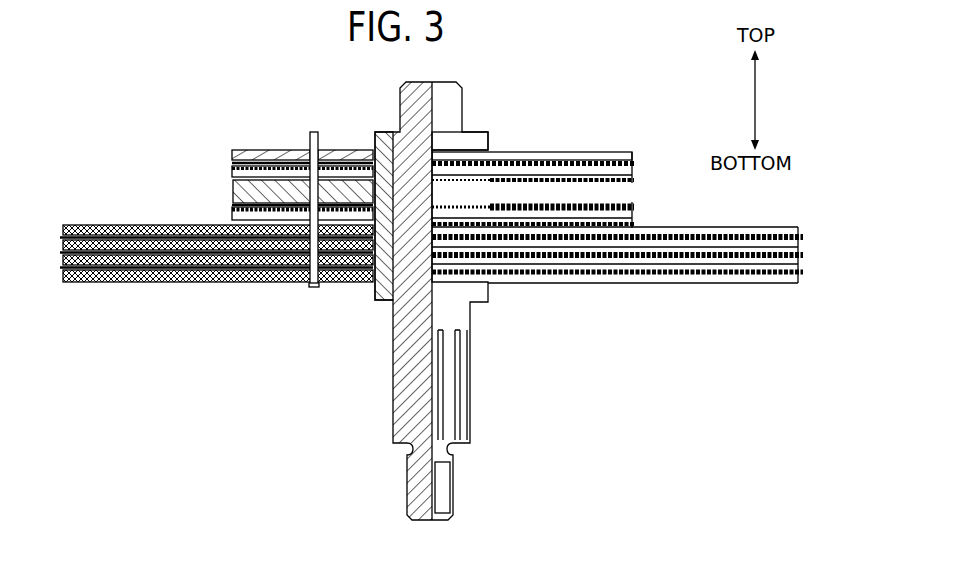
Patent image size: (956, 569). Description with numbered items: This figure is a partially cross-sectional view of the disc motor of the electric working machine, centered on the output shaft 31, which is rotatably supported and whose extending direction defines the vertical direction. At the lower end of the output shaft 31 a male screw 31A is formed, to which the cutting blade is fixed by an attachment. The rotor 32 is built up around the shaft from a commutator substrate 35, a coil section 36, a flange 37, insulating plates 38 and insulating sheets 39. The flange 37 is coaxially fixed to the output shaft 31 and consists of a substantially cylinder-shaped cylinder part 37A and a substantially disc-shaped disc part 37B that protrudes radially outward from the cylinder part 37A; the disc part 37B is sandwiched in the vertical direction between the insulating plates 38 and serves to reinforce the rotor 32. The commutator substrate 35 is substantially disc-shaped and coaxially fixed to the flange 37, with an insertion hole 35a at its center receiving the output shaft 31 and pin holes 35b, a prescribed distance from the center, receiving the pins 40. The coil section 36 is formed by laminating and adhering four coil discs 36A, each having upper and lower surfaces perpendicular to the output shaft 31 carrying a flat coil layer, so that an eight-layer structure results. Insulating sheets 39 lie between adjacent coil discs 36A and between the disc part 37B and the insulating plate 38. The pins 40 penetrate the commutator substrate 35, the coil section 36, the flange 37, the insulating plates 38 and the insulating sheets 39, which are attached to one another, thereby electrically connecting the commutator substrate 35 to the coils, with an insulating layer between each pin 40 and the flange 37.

The output shaft 31 is at (452, 103).
The male screw 31A is at (452, 489).
The rotor 32 is at (265, 138).
The commutator substrate 35 is at (357, 148).
The insertion hole 35a is at (383, 148).
The pin holes 35b is at (310, 148).
The coil section 36 is at (140, 220).
The coil discs 36A is at (645, 228).
The flange 37 is at (563, 195).
The cylinder part 37A is at (432, 150).
The disc part 37B is at (232, 152).
The insulating plates 38 is at (634, 165).
The insulating sheets 39 is at (60, 268).
The pins 40 is at (314, 131).